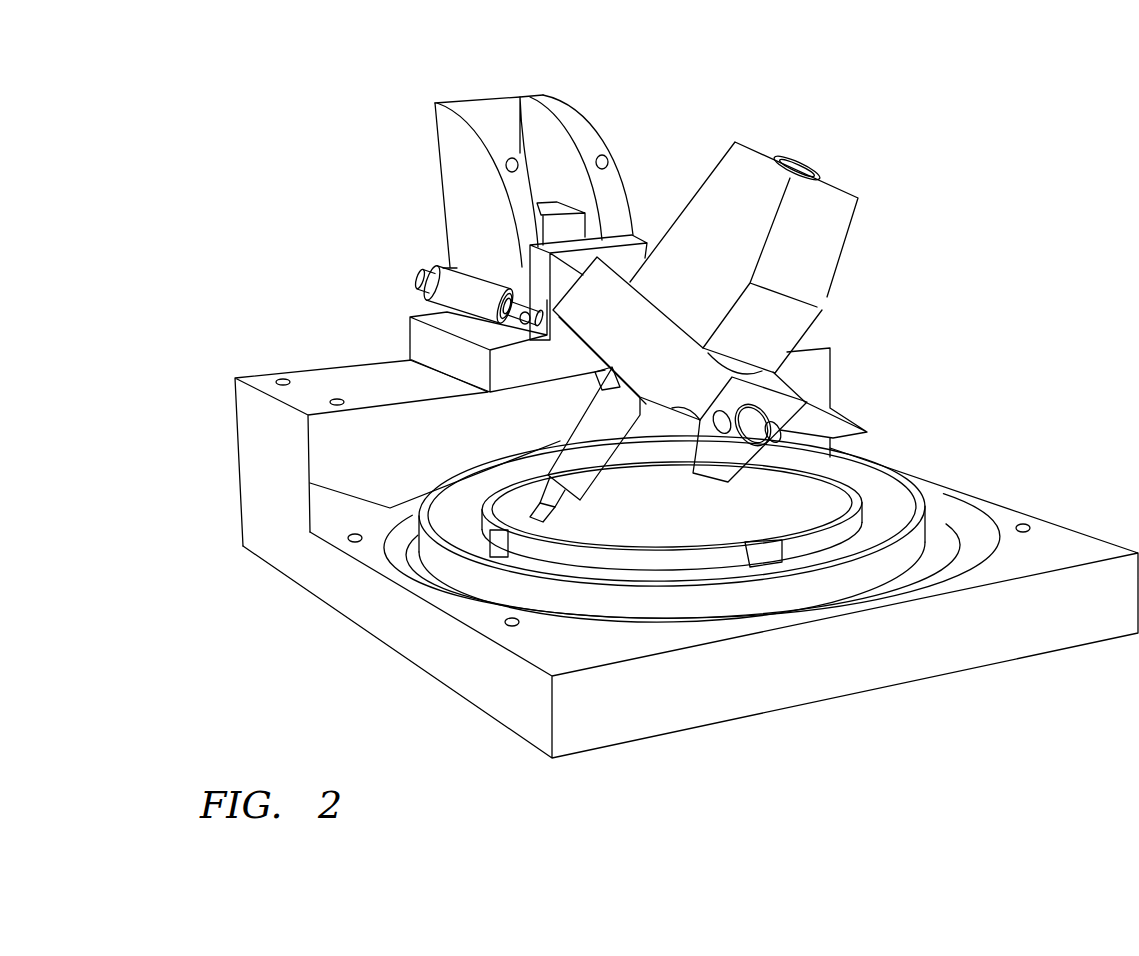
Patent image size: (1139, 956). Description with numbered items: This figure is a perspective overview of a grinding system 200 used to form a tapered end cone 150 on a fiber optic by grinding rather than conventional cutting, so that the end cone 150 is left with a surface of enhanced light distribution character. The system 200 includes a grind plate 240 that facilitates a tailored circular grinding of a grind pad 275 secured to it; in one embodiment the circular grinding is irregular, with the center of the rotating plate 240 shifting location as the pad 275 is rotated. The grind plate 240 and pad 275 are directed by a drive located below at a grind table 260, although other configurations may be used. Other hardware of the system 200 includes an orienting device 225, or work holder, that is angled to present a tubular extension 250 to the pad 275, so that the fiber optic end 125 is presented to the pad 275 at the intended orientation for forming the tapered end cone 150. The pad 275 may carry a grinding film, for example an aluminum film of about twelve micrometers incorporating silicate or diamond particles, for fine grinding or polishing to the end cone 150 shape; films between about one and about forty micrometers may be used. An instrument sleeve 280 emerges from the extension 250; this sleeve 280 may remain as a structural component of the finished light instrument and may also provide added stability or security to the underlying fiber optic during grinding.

The grinding system 200 is at (958, 113).
The orienting device 225 is at (662, 343).
The tubular extension 250 is at (600, 430).
The instrument sleeve 280 is at (538, 505).
The end cone 150 is at (538, 522).
The grind pad 275 is at (433, 490).
The optical end 125 is at (513, 503).
The grind plate 240 is at (857, 583).
The grind table 260 is at (1062, 547).